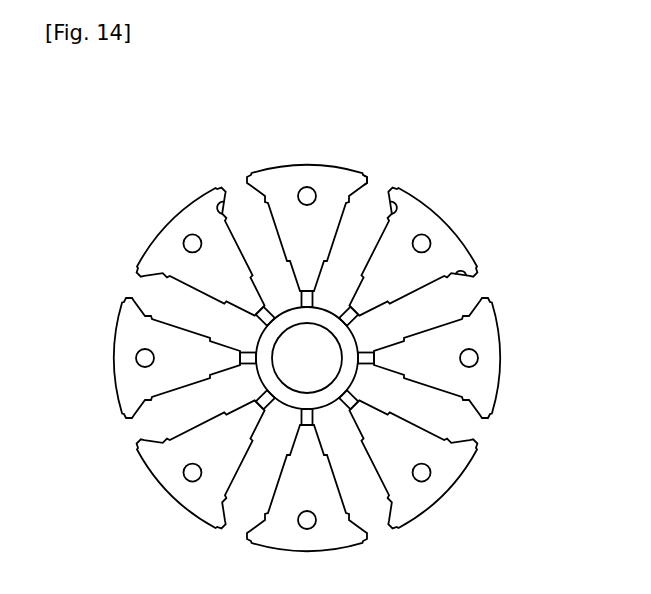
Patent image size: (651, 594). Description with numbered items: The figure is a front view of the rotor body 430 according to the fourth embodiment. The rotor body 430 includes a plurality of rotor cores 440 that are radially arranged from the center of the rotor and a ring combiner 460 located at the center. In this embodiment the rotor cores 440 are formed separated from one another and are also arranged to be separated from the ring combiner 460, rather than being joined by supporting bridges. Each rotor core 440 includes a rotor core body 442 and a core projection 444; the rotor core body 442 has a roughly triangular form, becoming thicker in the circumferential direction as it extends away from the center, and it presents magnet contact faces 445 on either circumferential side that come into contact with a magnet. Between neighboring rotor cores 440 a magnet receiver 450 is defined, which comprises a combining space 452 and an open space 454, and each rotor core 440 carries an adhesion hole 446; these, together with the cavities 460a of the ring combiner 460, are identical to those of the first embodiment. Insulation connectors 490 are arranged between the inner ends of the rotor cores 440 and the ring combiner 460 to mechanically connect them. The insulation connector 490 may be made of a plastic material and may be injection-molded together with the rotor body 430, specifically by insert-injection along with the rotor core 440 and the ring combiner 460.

The rotor body 430 is at (201, 93).
The rotor core 440 is at (325, 204).
The rotor core body 442 is at (309, 171).
The core projection 444 is at (366, 178).
The magnet contact face 445 is at (228, 219).
The adhesion hole 446 is at (426, 241).
The magnet receiver 450 is at (442, 297).
The combining space 452 is at (421, 265).
The open space 454 is at (359, 342).
The ring combiner 460 is at (286, 321).
The cavity 460a is at (302, 377).
The insulation connector 490 is at (259, 318).